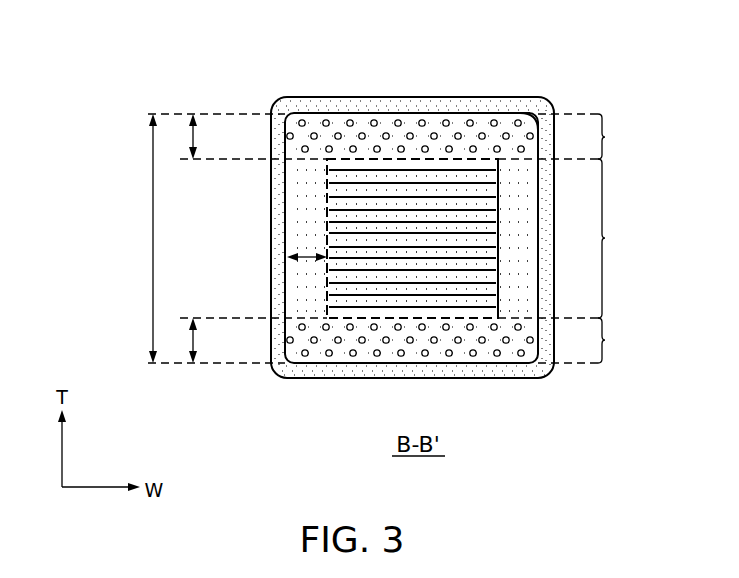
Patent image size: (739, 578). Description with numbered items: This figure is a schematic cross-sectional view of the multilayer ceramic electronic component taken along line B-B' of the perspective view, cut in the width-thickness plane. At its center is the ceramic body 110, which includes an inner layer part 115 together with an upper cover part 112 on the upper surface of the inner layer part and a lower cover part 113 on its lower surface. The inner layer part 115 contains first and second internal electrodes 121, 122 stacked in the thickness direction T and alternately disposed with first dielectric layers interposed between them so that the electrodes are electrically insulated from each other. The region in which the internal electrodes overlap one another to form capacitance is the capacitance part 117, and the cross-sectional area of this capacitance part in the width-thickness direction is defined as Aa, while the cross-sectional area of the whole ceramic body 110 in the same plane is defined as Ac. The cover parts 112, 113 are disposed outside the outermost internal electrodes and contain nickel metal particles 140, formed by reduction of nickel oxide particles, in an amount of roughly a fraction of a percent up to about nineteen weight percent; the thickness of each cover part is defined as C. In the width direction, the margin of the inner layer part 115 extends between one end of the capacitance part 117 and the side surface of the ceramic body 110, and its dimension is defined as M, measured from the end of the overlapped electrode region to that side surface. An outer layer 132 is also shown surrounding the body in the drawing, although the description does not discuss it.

The ceramic body 110 is at (357, 113).
The upper cover part 112 is at (467, 136).
The lower cover part 113 is at (467, 340).
The inner layer part 115 is at (472, 238).
The capacitance part 117 is at (316, 235).
The first internal electrode 121 is at (410, 159).
The second internal electrode 122 is at (460, 172).
The outer shell / pouch 132 is at (303, 106).
The nickel metal particles 140 is at (516, 113).
The cross-sectional area of the ceramic body Ac is at (539, 103).
The cross-sectional area of the capacitance part Aa is at (505, 298).
The margin dimension M is at (302, 259).
The thickness direction T is at (145, 238).
The cover part thickness C is at (183, 238).